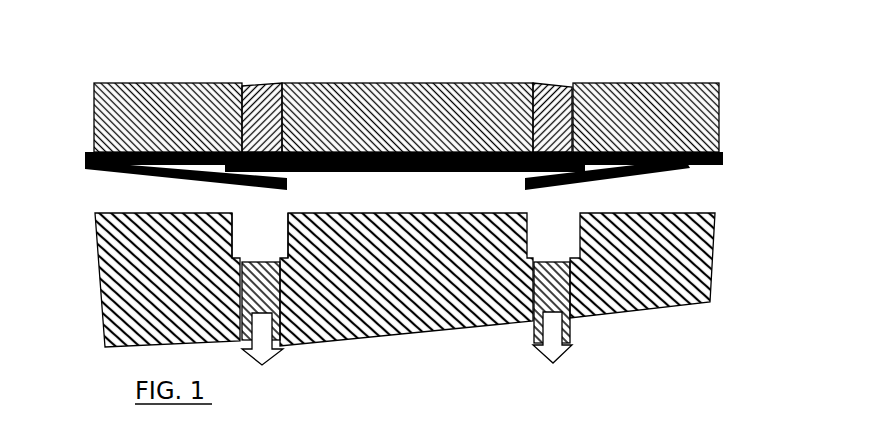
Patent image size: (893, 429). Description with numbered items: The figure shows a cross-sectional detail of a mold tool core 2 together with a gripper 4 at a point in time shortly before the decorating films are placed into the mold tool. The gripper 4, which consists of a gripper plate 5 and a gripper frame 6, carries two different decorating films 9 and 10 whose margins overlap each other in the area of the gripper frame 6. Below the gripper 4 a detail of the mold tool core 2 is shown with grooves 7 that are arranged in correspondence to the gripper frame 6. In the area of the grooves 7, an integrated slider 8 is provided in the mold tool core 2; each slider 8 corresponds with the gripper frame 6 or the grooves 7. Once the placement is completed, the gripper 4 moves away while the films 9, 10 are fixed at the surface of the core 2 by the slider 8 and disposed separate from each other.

The mold tool core 2 is at (368, 321).
The gripper 4 is at (406, 76).
The gripper plate 5 is at (378, 92).
The gripper frame 6 is at (260, 118).
The grooves 7 is at (262, 242).
The integrated slider 8 is at (268, 292).
The decorating film 9 is at (453, 172).
The decorating film 10 is at (655, 178).